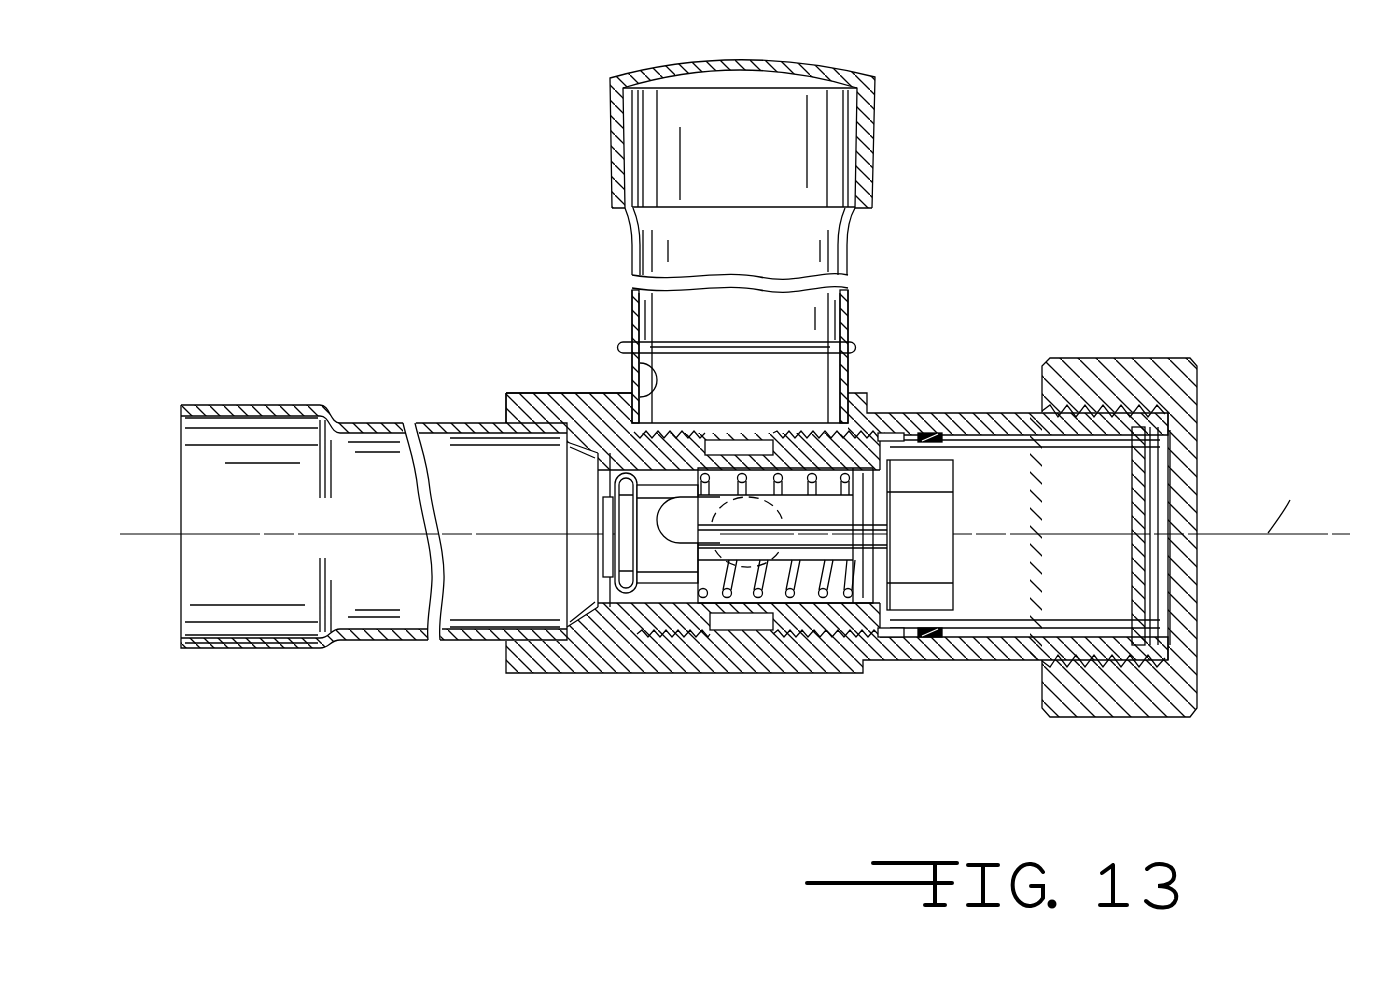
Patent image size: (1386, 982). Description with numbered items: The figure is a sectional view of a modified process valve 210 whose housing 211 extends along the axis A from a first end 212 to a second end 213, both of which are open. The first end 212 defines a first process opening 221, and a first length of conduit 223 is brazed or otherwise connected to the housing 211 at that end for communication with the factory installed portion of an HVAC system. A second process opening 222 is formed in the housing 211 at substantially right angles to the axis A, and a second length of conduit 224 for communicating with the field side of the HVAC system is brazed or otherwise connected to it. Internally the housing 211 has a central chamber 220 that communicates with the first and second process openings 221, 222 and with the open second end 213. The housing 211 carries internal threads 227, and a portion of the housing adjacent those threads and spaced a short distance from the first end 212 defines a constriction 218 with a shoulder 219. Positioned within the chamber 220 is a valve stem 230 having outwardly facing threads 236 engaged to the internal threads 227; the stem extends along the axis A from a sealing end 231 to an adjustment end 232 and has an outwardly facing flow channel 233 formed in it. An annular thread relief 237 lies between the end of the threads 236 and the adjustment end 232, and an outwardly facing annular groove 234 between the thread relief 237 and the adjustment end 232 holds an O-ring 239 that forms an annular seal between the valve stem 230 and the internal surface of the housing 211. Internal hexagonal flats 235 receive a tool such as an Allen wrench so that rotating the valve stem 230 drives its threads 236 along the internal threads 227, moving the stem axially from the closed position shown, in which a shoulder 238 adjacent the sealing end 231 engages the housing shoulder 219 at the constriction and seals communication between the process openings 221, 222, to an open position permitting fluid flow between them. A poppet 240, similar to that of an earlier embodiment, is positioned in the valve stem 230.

The modified process valve 210 is at (735, 404).
The housing 211 is at (526, 674).
The first end 212 is at (500, 660).
The second end 213 is at (1200, 670).
The constriction 218 is at (585, 442).
The shoulder 219 is at (668, 420).
The central chamber 220 is at (743, 447).
The first process opening 221 is at (520, 395).
The second process opening 222 is at (640, 372).
The first length of conduit 223 is at (425, 420).
The second length of conduit 224 is at (862, 295).
The internal threads 227 is at (668, 636).
The valve stem 230 is at (662, 470).
The sealing end 231 is at (598, 562).
The adjustment end 232 is at (950, 627).
The flow channel 233 is at (752, 615).
The annular groove 234 is at (917, 440).
The hexagonal flats 235 is at (935, 510).
The outwardly facing threads 236 is at (683, 432).
The annular thread relief 237 is at (886, 435).
The shoulder 238 is at (600, 616).
The O-ring 239 is at (930, 640).
The poppet 240 is at (845, 513).